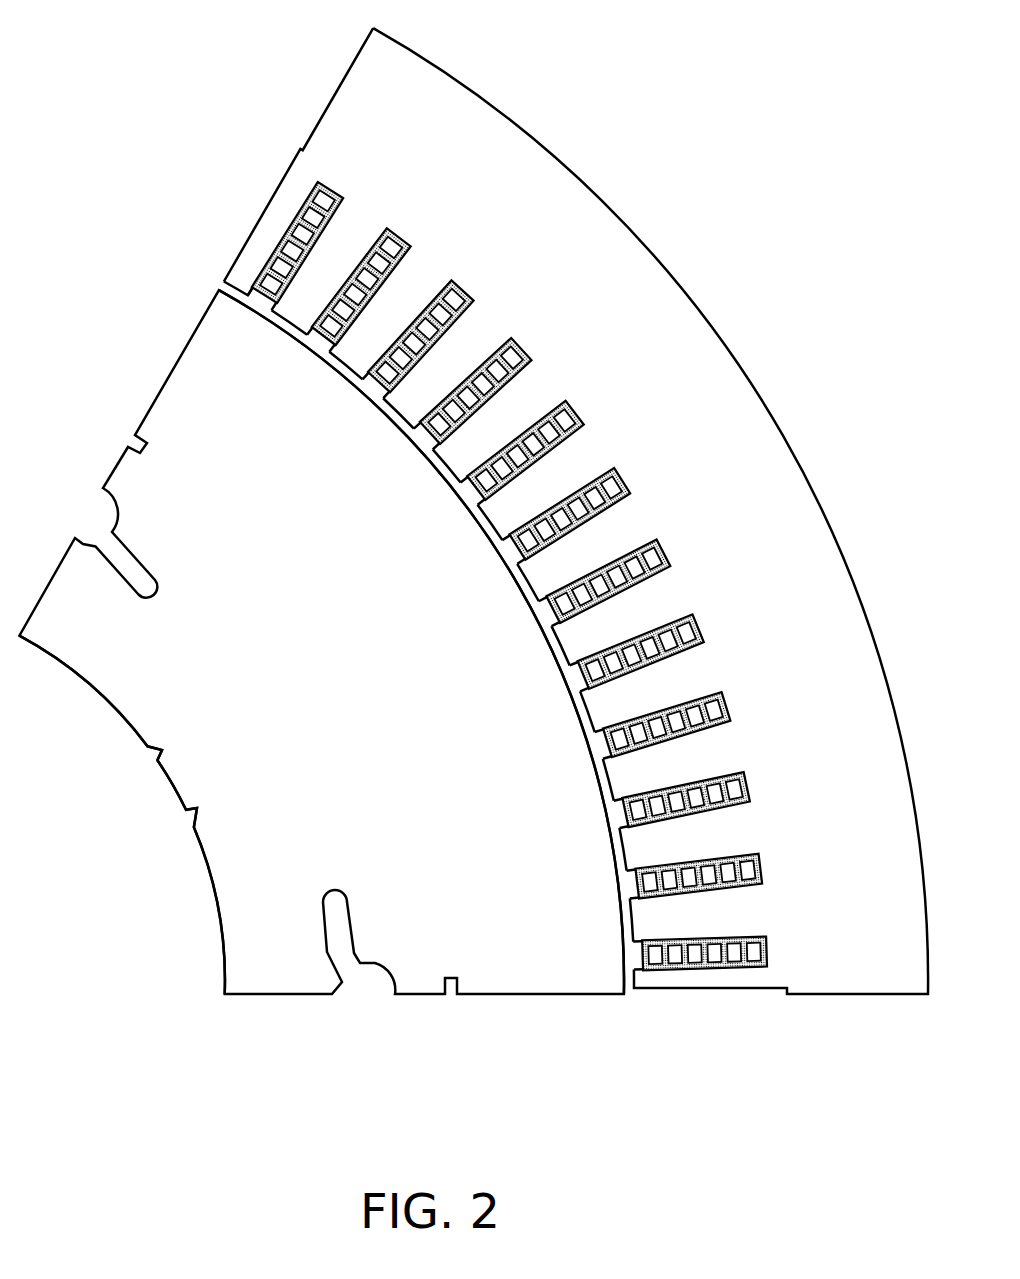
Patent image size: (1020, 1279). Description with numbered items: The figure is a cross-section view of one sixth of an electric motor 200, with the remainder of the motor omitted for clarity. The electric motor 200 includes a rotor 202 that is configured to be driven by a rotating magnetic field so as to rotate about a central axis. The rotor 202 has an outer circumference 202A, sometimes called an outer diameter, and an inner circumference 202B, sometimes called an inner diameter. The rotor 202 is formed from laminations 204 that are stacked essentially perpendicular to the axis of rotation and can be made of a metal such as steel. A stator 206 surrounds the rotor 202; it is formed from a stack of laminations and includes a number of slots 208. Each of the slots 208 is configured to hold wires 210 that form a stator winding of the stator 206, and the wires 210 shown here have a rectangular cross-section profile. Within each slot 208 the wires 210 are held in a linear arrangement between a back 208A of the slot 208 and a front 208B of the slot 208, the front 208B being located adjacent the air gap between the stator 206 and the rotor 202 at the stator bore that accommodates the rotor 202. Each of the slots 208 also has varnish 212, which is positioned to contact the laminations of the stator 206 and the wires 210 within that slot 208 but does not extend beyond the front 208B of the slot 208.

The electric motor 200 is at (830, 102).
The rotor 202 is at (357, 705).
The outer circumference 202A is at (590, 725).
The inner circumference 202B is at (118, 722).
The laminations 204 is at (225, 842).
The stator 206 is at (795, 620).
The slots 208 is at (635, 956).
The back of the slot 208A is at (322, 184).
The front of the slot 208B is at (247, 303).
The wires 210 is at (620, 820).
The varnish 212 is at (365, 385).